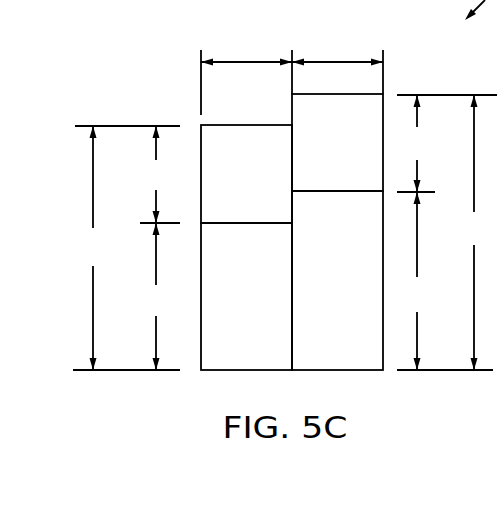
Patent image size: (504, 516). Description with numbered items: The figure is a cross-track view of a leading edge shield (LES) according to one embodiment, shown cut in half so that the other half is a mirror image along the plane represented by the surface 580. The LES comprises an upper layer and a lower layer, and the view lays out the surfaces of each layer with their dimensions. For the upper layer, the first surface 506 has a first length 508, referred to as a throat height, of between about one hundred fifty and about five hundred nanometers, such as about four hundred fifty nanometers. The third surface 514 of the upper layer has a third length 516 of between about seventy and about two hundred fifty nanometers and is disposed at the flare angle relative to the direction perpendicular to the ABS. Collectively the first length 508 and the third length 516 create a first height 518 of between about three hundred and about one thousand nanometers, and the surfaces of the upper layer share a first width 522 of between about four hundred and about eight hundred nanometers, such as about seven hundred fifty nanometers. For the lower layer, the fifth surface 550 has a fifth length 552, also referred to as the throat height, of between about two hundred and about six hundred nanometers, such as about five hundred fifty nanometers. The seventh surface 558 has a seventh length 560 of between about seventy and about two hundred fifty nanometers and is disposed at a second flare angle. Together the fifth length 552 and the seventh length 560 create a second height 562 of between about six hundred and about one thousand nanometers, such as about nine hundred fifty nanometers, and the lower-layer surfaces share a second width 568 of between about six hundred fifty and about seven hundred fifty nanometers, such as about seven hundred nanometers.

The first surface 506 is at (265, 307).
The first length 508 is at (152, 296).
The third surface 514 is at (265, 187).
The third length 516 is at (157, 174).
The first height 518 is at (90, 248).
The first width 522 is at (250, 61).
The fifth surface 550 is at (357, 288).
The fifth length 552 is at (415, 281).
The seventh surface 558 is at (358, 153).
The seventh length 560 is at (417, 143).
The second height 562 is at (470, 232).
The second width 568 is at (340, 61).
The surface 580 is at (226, 375).